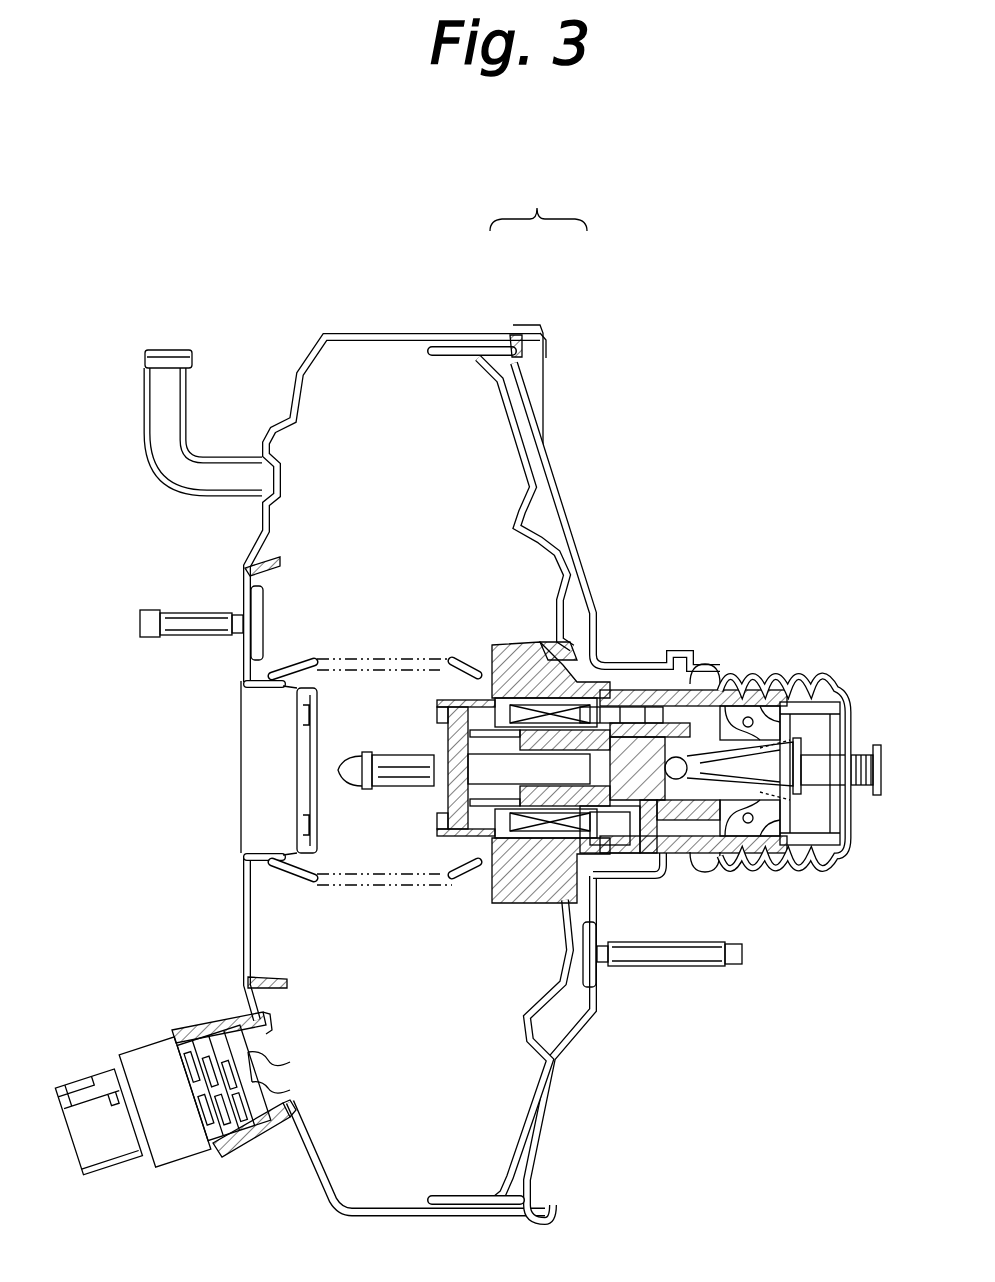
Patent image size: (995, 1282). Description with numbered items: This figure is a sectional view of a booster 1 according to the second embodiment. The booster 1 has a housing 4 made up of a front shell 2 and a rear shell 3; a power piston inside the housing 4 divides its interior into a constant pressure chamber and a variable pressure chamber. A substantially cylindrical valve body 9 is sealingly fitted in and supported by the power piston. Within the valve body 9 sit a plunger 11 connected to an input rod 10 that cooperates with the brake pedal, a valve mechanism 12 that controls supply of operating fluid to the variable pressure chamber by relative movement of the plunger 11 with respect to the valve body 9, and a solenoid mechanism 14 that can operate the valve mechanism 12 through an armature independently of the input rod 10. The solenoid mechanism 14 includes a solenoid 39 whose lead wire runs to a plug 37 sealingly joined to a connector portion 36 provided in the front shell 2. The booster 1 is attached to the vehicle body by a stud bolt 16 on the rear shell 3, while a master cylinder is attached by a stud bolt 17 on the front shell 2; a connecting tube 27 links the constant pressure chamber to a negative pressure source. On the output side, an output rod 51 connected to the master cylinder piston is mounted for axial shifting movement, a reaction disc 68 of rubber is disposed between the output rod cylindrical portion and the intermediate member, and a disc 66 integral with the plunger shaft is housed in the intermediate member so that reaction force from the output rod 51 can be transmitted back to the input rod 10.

The booster 1 is at (721, 213).
The front shell 2 is at (397, 334).
The rear shell 3 is at (558, 432).
The housing 4 is at (538, 203).
The valve body 9 is at (570, 650).
The input rod 10 is at (873, 790).
The plunger 11 is at (668, 745).
The valve mechanism 12 is at (717, 670).
The solenoid mechanism 14 is at (605, 706).
The stud bolt 16 is at (665, 952).
The stud bolt 17 is at (190, 637).
The connecting tube 27 is at (188, 390).
The connector portion 36 is at (270, 1147).
The plug 37 is at (187, 1060).
The solenoid 39 is at (520, 707).
The output rod 51 is at (383, 765).
The disc 66 is at (440, 753).
The reaction disc 68 is at (447, 787).